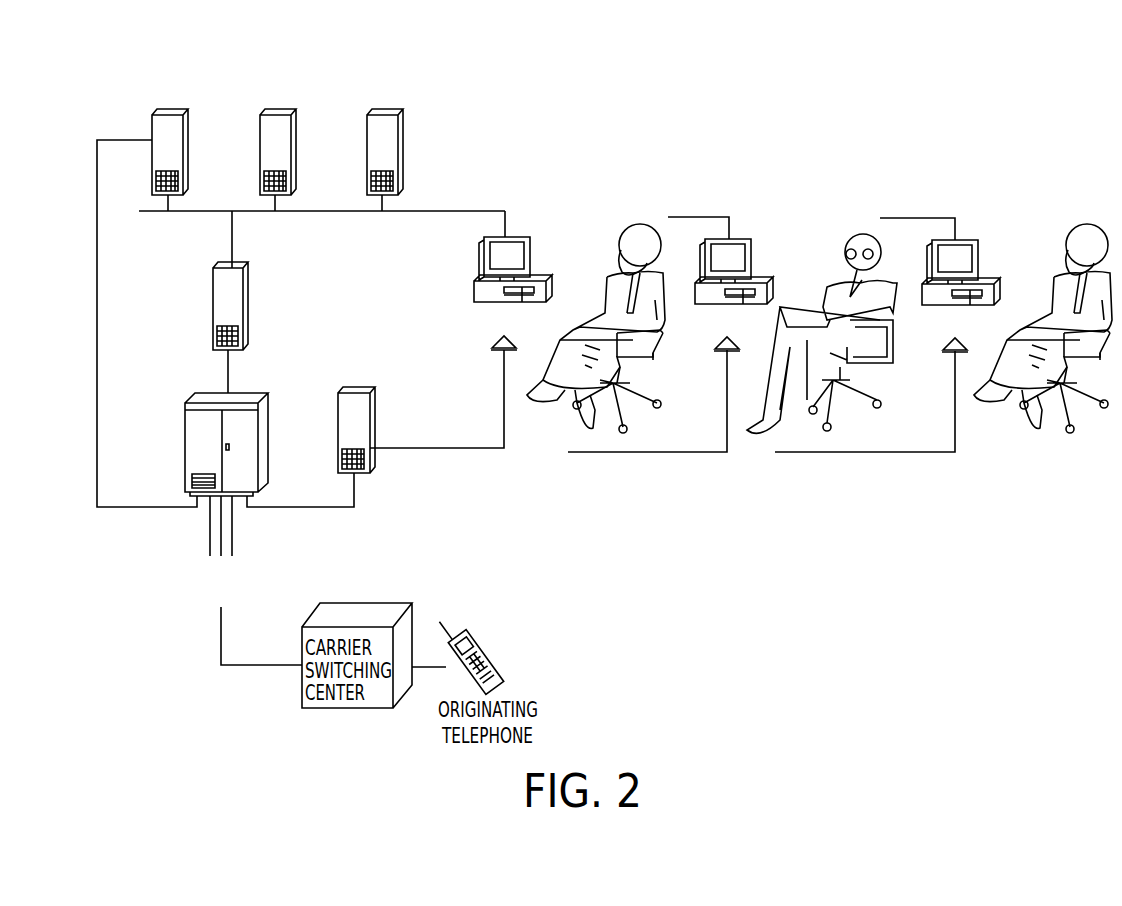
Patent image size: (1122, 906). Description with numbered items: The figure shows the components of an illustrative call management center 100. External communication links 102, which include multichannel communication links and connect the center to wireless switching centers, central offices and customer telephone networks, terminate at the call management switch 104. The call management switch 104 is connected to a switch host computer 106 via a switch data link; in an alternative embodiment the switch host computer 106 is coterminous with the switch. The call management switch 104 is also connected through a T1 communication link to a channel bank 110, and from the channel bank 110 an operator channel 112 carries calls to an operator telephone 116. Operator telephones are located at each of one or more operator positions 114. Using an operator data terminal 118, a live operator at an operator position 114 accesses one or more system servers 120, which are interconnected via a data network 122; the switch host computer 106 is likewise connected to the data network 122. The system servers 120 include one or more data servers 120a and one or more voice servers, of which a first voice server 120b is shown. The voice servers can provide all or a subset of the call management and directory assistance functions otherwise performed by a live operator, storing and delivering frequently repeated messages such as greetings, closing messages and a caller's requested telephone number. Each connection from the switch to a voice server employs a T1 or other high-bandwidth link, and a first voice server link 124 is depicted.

The call management center 100 is at (537, 98).
The external communication links 102 is at (265, 536).
The call management switch 104 is at (185, 433).
The switch host computer 106 is at (213, 287).
The channel bank 110 is at (340, 453).
The operator channel 112 is at (470, 449).
The operator position 114 is at (620, 225).
The operator telephone 116 is at (952, 352).
The operator data terminal 118 is at (1005, 215).
The system servers 120 is at (239, 112).
The data server 120a is at (367, 156).
The voice server 120b is at (152, 133).
The data network 122 is at (436, 212).
The first voice server link 124 is at (97, 283).